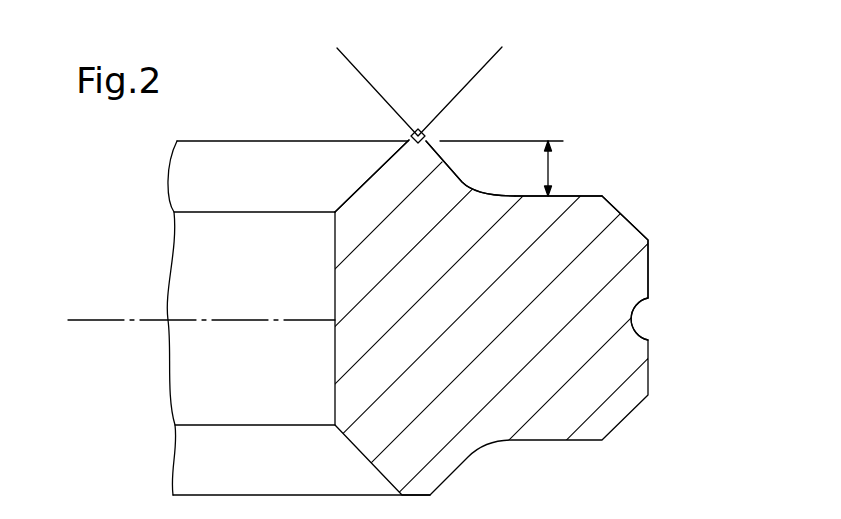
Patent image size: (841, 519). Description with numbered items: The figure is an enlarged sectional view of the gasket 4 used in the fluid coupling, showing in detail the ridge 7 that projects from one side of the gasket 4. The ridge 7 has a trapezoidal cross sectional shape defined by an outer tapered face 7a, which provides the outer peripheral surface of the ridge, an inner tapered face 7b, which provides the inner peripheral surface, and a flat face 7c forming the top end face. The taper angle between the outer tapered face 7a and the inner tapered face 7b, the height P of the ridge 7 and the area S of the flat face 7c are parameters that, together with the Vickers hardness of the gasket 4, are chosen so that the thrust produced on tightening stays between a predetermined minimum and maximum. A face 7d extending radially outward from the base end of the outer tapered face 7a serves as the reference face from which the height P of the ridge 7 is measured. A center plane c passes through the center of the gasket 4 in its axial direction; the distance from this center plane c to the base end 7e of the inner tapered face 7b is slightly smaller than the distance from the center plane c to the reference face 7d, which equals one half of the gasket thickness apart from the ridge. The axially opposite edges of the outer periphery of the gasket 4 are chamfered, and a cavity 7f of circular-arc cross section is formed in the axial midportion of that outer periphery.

The ridge 7 is at (384, 190).
The outer tapered face 7a is at (463, 178).
The inner tapered face 7b is at (343, 197).
The flat face 7c is at (416, 136).
The reference face 7d is at (580, 196).
The base end of the inner tapered face 7e is at (298, 206).
The cavity 7f is at (646, 299).
The gasket 4 is at (615, 147).
The area of the flat face S is at (421, 137).
The height of the ridge P is at (534, 168).
The center plane c is at (106, 318).